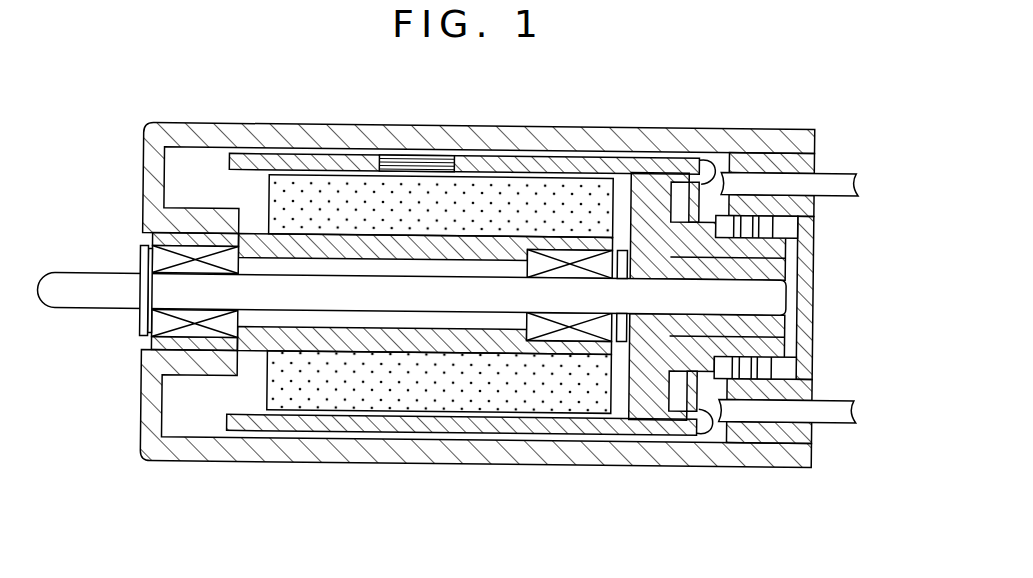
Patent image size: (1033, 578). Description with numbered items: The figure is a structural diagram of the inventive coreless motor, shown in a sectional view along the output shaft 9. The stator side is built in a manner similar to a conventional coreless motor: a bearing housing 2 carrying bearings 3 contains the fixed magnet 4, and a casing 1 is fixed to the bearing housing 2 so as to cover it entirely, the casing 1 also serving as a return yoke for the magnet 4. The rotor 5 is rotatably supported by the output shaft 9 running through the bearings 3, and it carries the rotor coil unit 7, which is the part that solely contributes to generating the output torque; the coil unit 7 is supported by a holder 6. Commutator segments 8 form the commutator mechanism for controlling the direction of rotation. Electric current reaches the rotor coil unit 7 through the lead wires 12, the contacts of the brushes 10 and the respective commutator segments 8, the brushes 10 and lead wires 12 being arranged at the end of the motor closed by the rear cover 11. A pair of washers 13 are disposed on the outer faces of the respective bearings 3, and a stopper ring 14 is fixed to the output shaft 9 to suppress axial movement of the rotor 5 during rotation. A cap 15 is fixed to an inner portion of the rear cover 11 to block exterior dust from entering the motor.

The casing 1 is at (456, 138).
The bearing housing 2 is at (152, 240).
The bearings 3 is at (197, 338).
The magnet 4 is at (360, 388).
The rotor 5 is at (543, 157).
The holder 6 is at (645, 388).
The rotor coil unit 7 is at (338, 154).
The commutator segments 8 is at (682, 393).
The output shaft 9 is at (110, 302).
The brushes 10 is at (770, 231).
The rear cover 11 is at (804, 139).
The lead wires 12 is at (752, 179).
The washers 13 is at (150, 339).
The stopper ring 14 is at (140, 261).
The cap 15 is at (815, 268).